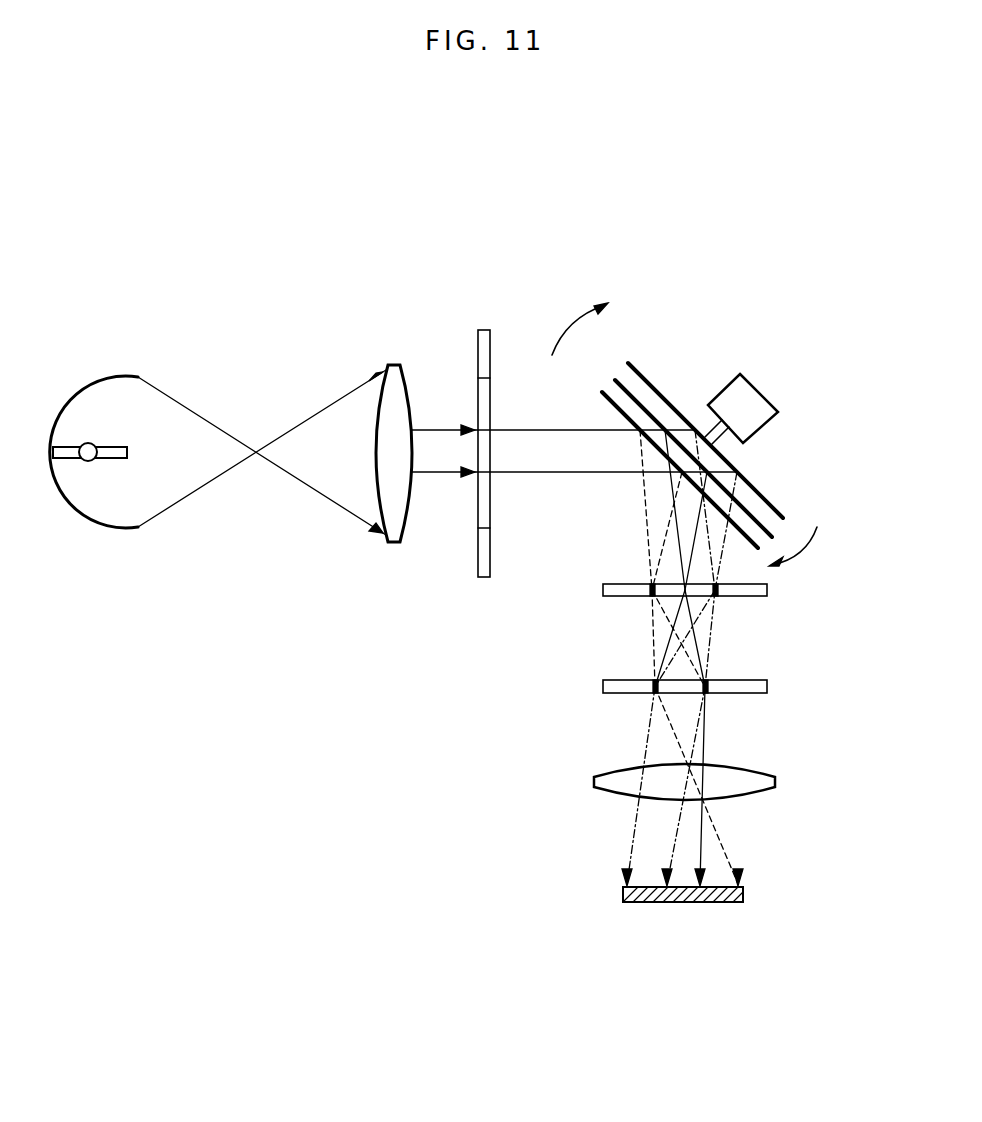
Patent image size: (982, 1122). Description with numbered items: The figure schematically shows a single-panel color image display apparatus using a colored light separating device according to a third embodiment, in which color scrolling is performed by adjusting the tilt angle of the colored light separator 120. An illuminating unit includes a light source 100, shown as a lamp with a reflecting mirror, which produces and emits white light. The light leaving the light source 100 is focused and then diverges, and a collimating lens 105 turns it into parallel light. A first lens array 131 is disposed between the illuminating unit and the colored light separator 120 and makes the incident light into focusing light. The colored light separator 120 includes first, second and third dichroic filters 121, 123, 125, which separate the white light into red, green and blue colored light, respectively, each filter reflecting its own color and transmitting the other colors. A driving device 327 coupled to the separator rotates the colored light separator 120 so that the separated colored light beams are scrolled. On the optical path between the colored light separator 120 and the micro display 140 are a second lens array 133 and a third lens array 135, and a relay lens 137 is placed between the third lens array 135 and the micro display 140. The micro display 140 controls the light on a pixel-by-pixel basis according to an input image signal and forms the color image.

The light source 100 is at (90, 374).
The collimating lens 105 is at (393, 360).
The first lens array 131 is at (488, 328).
The colored light separator 120 is at (737, 337).
The first dichroic filter 121 is at (608, 396).
The second dichroic filter 123 is at (626, 390).
The third dichroic filter 125 is at (668, 403).
The driving device 327 is at (760, 392).
The second lens array 133 is at (767, 590).
The third lens array 135 is at (767, 687).
The relay lens 137 is at (775, 782).
The micro display 140 is at (748, 895).